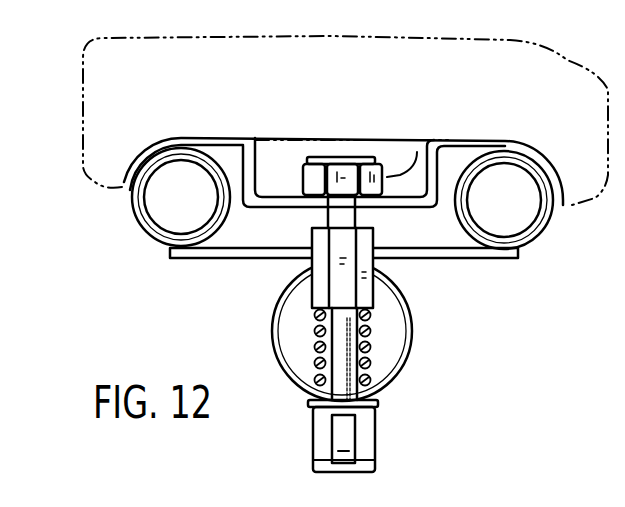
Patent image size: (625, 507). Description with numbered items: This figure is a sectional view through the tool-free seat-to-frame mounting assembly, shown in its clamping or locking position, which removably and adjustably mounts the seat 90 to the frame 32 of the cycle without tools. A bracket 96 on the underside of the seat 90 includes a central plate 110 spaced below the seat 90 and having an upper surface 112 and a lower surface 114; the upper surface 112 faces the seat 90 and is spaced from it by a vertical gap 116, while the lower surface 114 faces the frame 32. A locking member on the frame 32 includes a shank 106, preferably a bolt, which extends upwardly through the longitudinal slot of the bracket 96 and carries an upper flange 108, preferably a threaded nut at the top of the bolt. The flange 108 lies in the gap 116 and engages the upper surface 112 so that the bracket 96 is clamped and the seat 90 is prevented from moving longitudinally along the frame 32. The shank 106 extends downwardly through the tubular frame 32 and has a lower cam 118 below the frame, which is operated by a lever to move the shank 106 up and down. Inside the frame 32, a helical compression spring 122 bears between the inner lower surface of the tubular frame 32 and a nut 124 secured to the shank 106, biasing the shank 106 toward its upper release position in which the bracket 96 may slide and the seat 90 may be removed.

The seat 90 is at (80, 107).
The bracket 96 is at (256, 141).
The upper surface 112 is at (288, 165).
The vertical gap 116 is at (378, 139).
The upper flange 108 is at (417, 152).
The lower surface 114 is at (294, 209).
The central plate 110 is at (407, 205).
The nut 124 is at (378, 270).
The shank 106 is at (350, 343).
The frame 32 is at (272, 360).
The helical compression spring 122 is at (371, 362).
The lower cam 118 is at (365, 447).